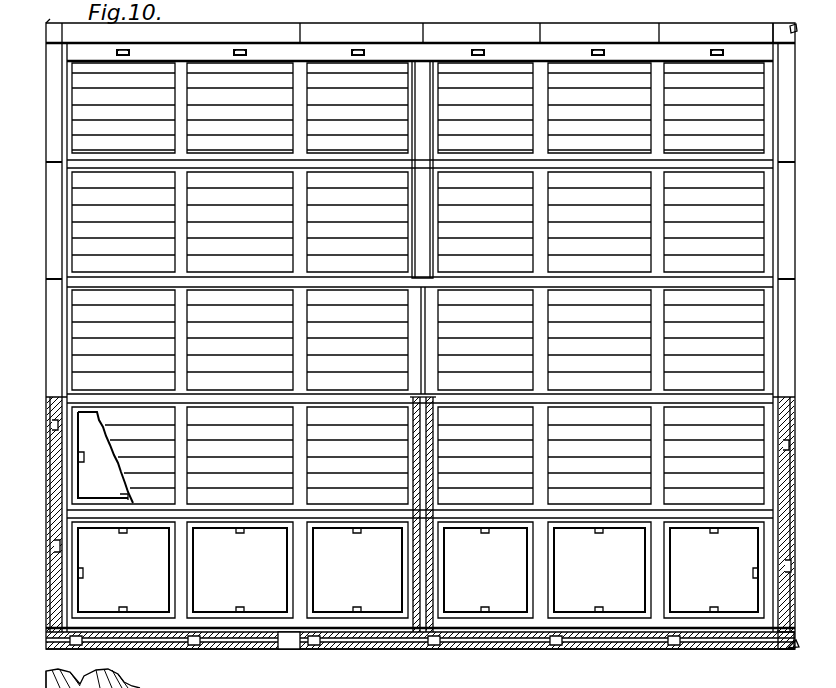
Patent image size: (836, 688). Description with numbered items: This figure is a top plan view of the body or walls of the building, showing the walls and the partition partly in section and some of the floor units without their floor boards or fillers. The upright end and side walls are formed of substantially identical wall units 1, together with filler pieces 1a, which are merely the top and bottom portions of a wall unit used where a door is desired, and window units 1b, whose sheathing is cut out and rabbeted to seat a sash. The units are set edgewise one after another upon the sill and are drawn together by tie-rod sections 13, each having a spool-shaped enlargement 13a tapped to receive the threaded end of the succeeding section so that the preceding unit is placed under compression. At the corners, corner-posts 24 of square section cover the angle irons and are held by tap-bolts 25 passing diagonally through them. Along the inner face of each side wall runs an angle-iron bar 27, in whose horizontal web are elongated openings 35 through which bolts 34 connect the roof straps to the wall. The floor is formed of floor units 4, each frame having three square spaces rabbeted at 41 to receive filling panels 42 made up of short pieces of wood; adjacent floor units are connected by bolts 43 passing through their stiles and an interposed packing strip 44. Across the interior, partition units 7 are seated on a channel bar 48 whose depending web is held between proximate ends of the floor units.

The wall unit 1 is at (452, 27).
The filler piece 1a is at (52, 353).
The window unit 1b is at (238, 651).
The floor unit 4 is at (418, 570).
The partition unit 7 is at (421, 201).
The tie-rod section 13 is at (284, 648).
The spool-shaped enlargement 13a is at (318, 648).
The corner-post 24 is at (780, 47).
The tap-bolt 25 is at (793, 26).
The angle-iron bar 27 is at (392, 54).
The bolt 34 is at (356, 48).
The elongated opening 35 is at (366, 49).
The rabbet 41 is at (178, 545).
The filling panel 42 is at (418, 455).
The bolt 43 is at (84, 572).
The packing strip 44 is at (352, 397).
The channel bar 48 is at (436, 220).